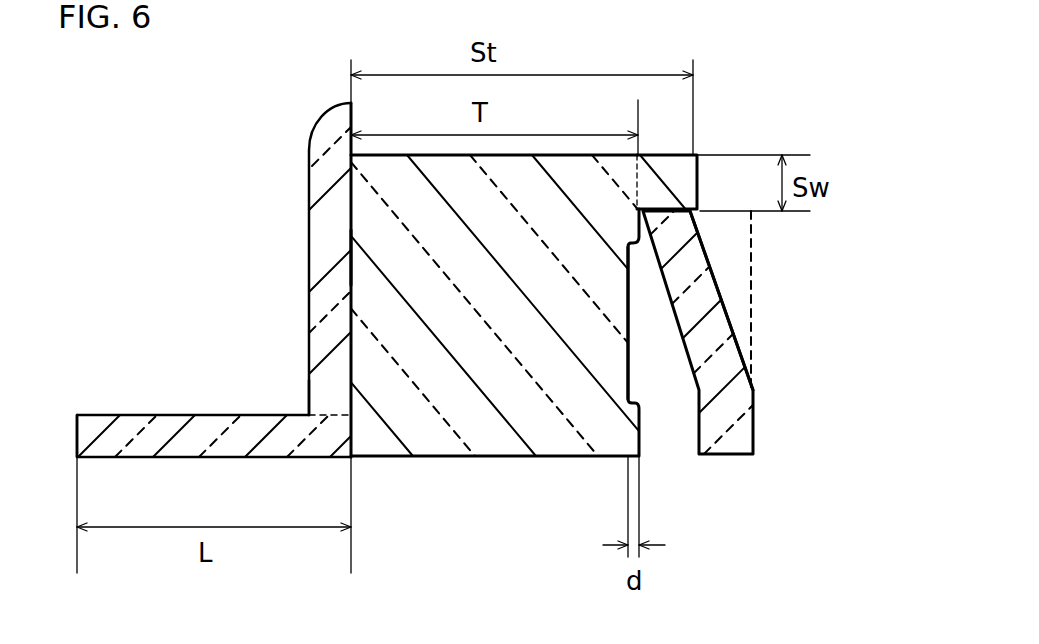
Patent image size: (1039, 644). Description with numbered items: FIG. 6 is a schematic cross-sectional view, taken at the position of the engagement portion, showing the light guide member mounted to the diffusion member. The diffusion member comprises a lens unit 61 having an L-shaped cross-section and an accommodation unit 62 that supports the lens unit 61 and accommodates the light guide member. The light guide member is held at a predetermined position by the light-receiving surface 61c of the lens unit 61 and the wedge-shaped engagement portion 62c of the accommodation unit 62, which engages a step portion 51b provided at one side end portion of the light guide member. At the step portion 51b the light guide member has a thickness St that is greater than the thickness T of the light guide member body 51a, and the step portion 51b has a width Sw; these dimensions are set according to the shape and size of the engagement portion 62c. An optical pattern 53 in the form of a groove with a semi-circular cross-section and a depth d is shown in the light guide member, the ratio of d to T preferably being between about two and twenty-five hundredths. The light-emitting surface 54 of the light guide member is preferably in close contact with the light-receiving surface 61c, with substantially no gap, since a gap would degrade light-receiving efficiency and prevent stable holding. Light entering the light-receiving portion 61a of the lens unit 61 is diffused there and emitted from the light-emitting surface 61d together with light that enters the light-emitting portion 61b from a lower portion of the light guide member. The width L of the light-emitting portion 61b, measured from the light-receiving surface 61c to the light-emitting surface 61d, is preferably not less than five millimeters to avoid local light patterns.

The light guide member body 51a is at (455, 456).
The step portion 51b is at (686, 177).
The optical pattern 53 is at (630, 287).
The light-emitting surface 54 is at (352, 276).
The lens unit 61 is at (307, 166).
The light-receiving portion 61a is at (318, 290).
The light-emitting portion 61b is at (215, 434).
The light-receiving surface 61c is at (317, 395).
The light-emitting surface 61d is at (77, 432).
The accommodation unit 62 is at (757, 415).
The engagement portion 62c is at (685, 250).